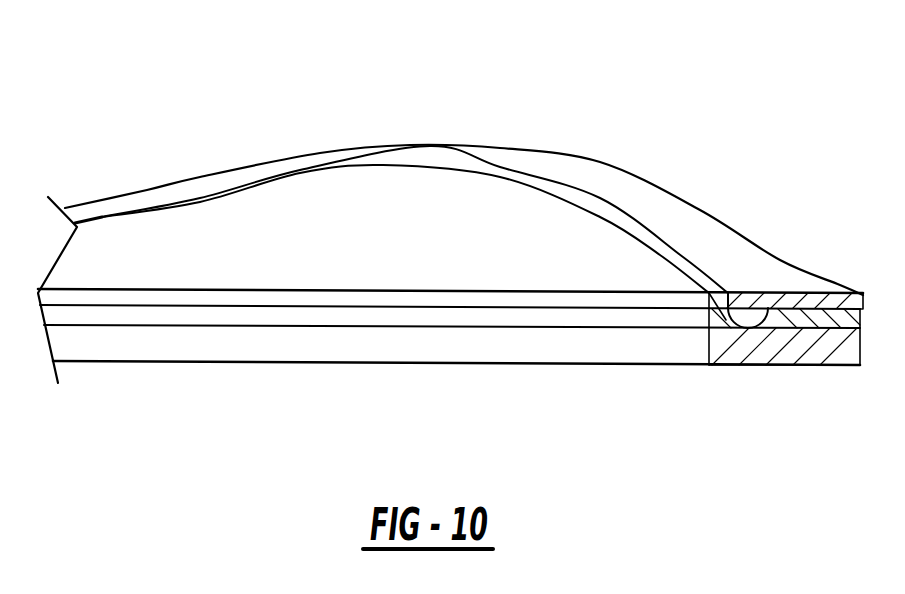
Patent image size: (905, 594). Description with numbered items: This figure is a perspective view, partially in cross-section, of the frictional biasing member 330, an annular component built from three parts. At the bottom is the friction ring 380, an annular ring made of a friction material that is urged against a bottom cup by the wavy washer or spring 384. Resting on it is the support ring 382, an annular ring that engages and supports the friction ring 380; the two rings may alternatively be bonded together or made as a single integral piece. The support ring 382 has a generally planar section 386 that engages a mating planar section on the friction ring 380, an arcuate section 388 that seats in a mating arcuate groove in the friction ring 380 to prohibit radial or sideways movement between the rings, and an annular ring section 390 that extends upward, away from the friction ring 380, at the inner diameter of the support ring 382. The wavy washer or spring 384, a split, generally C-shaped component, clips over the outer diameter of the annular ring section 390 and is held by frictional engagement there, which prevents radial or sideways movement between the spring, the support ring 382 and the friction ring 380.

The frictional biasing member 330 is at (698, 135).
The friction ring 380 is at (297, 337).
The support ring 382 is at (220, 315).
The wavy washer or spring 384 is at (702, 218).
The planar section 386 is at (823, 322).
The arcuate section 388 is at (740, 338).
The annular ring section 390 is at (722, 313).